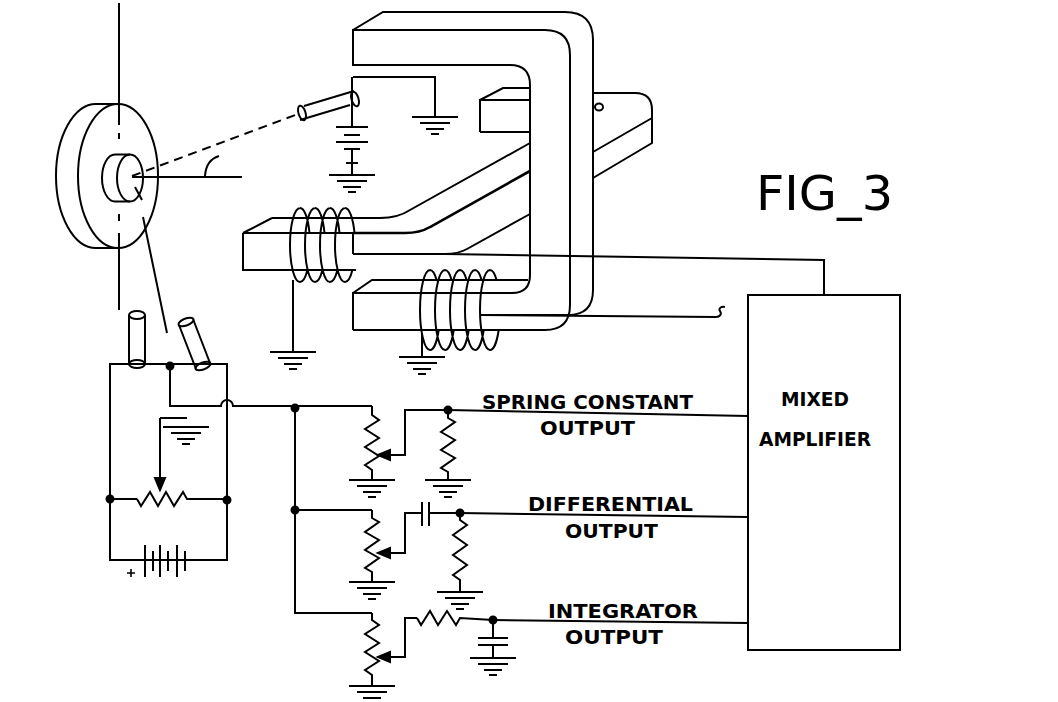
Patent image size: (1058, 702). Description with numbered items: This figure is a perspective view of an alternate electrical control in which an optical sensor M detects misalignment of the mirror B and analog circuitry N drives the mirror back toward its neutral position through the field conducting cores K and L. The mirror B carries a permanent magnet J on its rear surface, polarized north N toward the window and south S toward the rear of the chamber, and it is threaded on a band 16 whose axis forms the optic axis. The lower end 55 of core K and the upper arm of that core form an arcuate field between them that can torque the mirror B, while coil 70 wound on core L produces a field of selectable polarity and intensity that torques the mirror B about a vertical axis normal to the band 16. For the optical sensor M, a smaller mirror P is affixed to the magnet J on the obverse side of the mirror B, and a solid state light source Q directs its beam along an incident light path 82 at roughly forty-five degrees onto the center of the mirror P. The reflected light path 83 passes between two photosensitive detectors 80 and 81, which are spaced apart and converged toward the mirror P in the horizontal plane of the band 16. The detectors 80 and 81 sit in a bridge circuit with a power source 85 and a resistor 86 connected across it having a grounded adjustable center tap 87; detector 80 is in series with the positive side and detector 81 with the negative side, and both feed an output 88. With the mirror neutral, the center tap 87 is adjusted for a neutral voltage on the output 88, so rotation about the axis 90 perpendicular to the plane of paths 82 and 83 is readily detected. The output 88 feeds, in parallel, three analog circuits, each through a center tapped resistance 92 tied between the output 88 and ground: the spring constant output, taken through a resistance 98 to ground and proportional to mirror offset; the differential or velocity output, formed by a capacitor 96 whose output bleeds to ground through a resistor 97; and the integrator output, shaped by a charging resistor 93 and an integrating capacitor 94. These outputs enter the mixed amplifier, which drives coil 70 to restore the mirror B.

The axis 90 is at (120, 27).
The permanent magnet J is at (110, 163).
The analog circuitry N is at (65, 173).
The mirror B is at (80, 232).
The smaller mirror P is at (138, 188).
The south pole S is at (198, 178).
The band 16 is at (224, 162).
The incident light path 82 is at (240, 137).
The reflected light path 83 is at (155, 267).
The solid state light source Q is at (320, 102).
The field conducting core K is at (455, 62).
The field conducting core L is at (478, 239).
The lower end of core K 55 is at (275, 272).
The coil 70 is at (362, 210).
The optical sensor M is at (155, 325).
The photosensitive detector 80 is at (130, 340).
The photosensitive detector 81 is at (202, 337).
The output 88 is at (272, 412).
The center tap 87 is at (158, 462).
The resistor 86 is at (187, 490).
The power source 85 is at (167, 583).
The center tap resistance 92 is at (362, 446).
The resistance 98 is at (457, 456).
The capacitor 96 is at (427, 527).
The resistor 97 is at (470, 553).
The charging resistor 93 is at (443, 627).
The integrating capacitor 94 is at (513, 640).